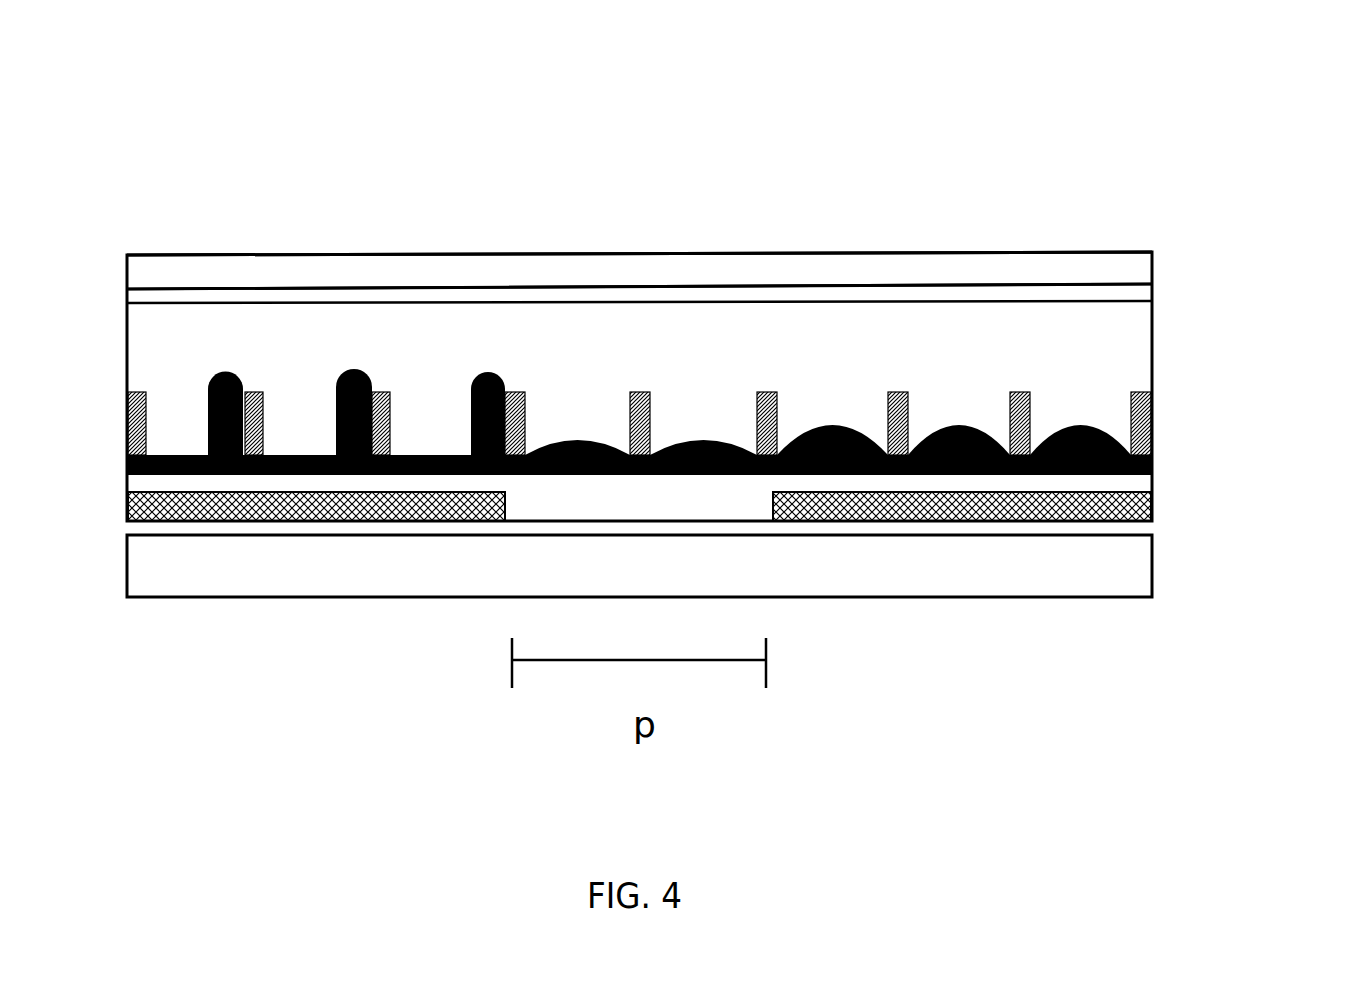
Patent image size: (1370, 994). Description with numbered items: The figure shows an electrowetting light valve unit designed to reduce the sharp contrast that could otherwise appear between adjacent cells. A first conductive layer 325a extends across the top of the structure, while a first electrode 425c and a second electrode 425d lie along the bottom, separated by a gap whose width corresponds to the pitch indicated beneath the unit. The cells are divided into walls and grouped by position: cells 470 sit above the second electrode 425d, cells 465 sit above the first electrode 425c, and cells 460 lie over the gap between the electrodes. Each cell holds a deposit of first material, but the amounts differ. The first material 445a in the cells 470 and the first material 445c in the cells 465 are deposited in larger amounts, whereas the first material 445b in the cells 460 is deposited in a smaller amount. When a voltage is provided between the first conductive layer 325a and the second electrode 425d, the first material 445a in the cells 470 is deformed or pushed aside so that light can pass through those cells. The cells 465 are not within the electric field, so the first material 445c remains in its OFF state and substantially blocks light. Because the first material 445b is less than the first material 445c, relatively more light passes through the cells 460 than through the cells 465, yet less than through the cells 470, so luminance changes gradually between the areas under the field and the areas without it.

The first conductive layer 325a is at (1153, 287).
The cells 470 is at (420, 410).
The first material 445a is at (475, 378).
The first material 445b is at (577, 441).
The first material 445c is at (984, 425).
The cells 460 is at (713, 418).
The cells 465 is at (1082, 417).
The first electrode 425c is at (952, 521).
The second electrode 425d is at (297, 523).